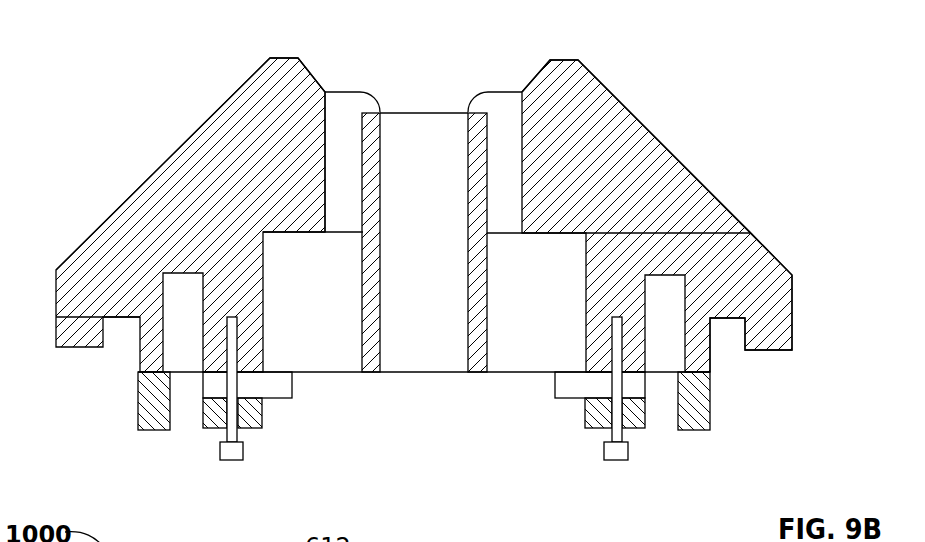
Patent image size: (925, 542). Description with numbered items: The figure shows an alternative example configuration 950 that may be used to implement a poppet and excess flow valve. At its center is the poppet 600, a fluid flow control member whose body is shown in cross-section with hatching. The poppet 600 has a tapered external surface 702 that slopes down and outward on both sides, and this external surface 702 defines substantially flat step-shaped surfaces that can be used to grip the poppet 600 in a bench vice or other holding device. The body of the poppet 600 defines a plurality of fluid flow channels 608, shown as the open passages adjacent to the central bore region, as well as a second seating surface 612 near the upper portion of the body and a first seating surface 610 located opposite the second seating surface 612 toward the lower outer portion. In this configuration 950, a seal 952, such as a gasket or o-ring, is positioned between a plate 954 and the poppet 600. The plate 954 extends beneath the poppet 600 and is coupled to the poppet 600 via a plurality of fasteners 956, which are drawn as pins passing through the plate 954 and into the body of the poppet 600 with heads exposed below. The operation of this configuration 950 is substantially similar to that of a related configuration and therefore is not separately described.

The alternative example configuration 950 is at (114, 62).
The poppet 600 is at (693, 192).
The external surface 702 is at (622, 102).
The second seating surface 612 is at (324, 88).
The fluid flow channels 608 is at (512, 115).
The first seating surface 610 is at (765, 352).
The seal 952 is at (213, 385).
The plate 954 is at (257, 417).
The fasteners 956 is at (232, 452).